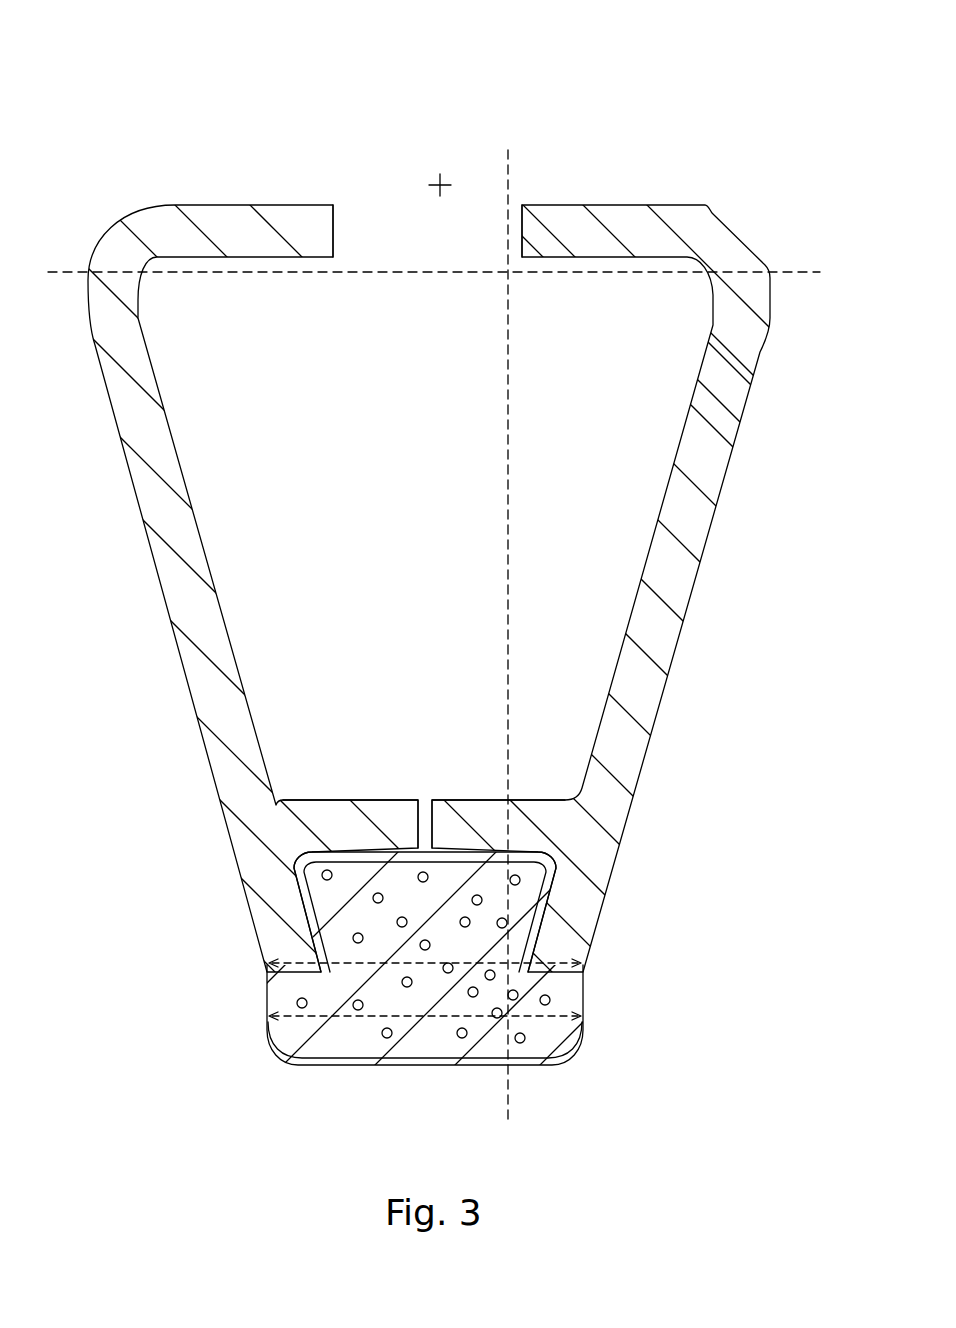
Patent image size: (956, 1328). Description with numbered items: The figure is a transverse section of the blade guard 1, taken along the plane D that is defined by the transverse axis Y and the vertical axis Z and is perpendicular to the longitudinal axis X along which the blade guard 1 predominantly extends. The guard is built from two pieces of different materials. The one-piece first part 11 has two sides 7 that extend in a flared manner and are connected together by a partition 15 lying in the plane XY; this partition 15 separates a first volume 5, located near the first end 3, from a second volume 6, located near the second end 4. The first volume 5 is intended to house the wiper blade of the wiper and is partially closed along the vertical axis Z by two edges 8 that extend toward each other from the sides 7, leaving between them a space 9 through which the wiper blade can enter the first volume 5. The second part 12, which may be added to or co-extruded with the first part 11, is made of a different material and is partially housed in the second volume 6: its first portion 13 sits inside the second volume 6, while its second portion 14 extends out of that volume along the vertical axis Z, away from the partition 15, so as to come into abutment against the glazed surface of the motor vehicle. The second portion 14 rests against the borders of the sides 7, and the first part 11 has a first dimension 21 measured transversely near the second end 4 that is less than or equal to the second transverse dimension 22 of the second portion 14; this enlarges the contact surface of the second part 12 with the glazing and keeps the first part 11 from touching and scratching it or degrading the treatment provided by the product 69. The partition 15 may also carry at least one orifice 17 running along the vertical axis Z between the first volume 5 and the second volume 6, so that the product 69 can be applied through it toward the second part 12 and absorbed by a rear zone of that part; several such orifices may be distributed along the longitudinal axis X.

The blade guard 1 is at (254, 168).
The first end 3 is at (361, 162).
The second end 4 is at (478, 664).
The first volume 5 is at (580, 697).
The second volume 6 is at (560, 893).
The sides 7 is at (205, 685).
The edges 8 is at (317, 225).
The space 9 is at (399, 226).
The first part 11 is at (208, 212).
The second part 12 is at (322, 1036).
The first portion 13 is at (370, 908).
The second portion 14 is at (545, 1035).
The partition 15 is at (337, 828).
The orifice 17 is at (427, 830).
The first dimension 21 is at (362, 963).
The second transverse dimension 22 is at (554, 1017).
The product 69 is at (310, 1065).
The longitudinal axis X is at (443, 178).
The transverse axis Y is at (770, 275).
The vertical axis Z is at (515, 1098).
The plane D is at (508, 322).